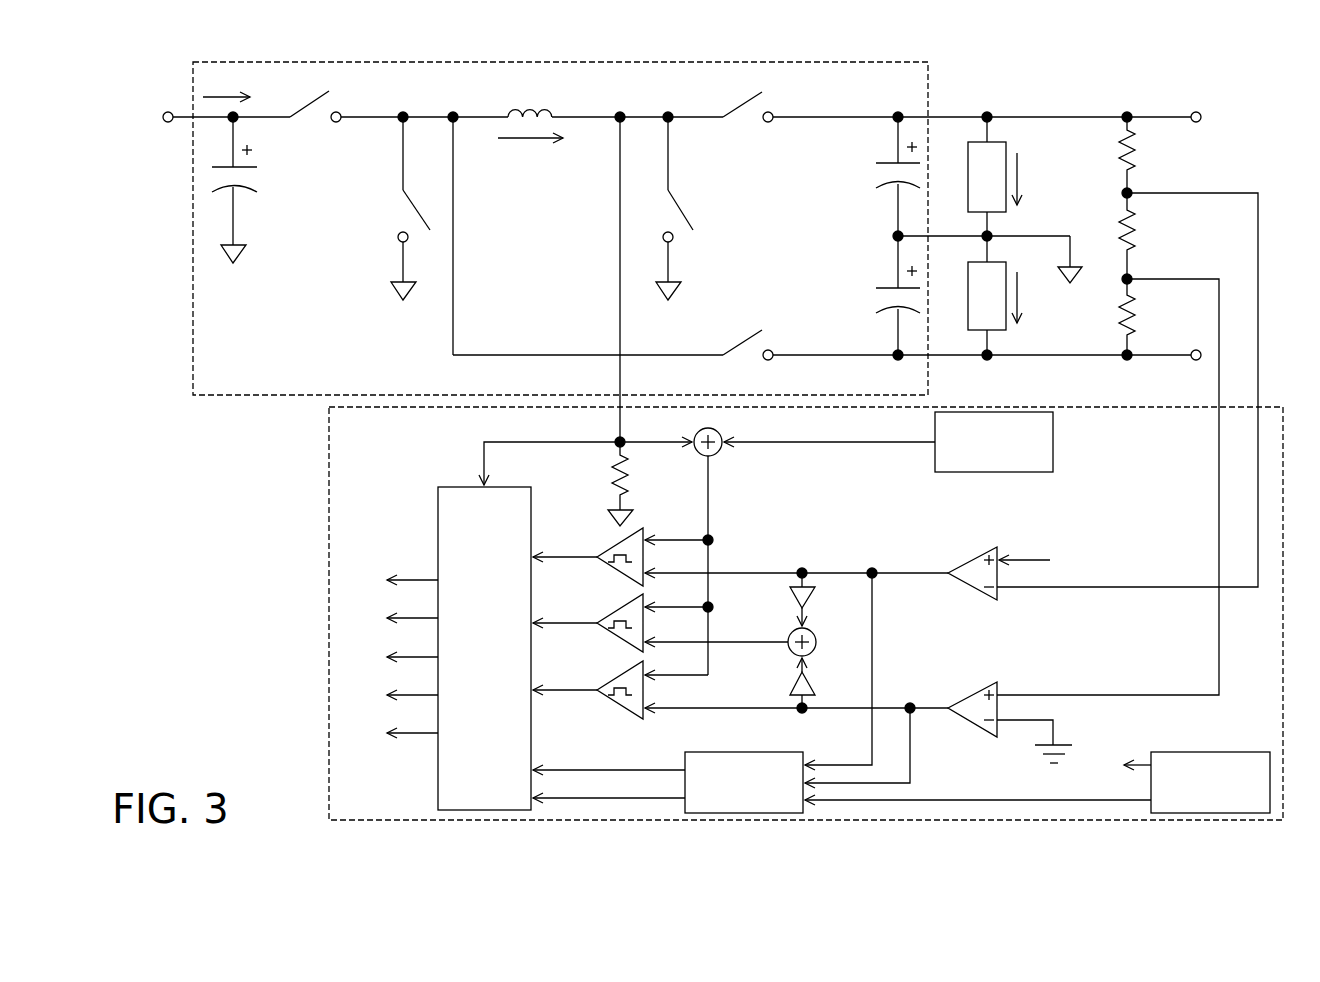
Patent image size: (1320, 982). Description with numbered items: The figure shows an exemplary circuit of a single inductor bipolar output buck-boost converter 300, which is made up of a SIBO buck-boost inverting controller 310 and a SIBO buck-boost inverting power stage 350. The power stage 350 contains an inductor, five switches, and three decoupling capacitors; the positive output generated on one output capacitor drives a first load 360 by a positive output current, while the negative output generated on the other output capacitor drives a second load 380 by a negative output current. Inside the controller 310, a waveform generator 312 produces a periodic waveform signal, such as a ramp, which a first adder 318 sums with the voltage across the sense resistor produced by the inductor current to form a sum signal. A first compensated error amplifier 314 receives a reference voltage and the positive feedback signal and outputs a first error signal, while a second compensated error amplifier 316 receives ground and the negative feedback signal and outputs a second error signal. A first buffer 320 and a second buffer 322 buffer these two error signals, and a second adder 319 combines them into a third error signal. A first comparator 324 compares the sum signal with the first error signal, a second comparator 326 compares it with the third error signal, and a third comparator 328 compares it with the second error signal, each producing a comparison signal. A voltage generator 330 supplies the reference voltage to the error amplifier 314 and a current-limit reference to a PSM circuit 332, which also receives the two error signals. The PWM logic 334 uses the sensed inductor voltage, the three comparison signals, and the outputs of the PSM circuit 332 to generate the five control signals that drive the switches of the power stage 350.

The SIBO buck-boost converter 300 is at (1317, 70).
The SIBO buck-boost inverting power stage 350 is at (193, 327).
The SIBO buck-boost inverting controller 310 is at (329, 447).
The load 360 is at (1006, 142).
The load 380 is at (1006, 330).
The waveform generator 312 is at (1053, 440).
The compensated error amplifier 314 is at (964, 552).
The compensated error amplifier 316 is at (964, 687).
The adder 318 is at (712, 429).
The adder 319 is at (816, 641).
The buffer 320 is at (812, 597).
The buffer 322 is at (812, 684).
The comparator 324 is at (641, 528).
The comparator 326 is at (614, 606).
The comparator 328 is at (614, 673).
The voltage generator 330 is at (1212, 752).
The PSM circuit 332 is at (745, 752).
The PWM logic 334 is at (462, 487).